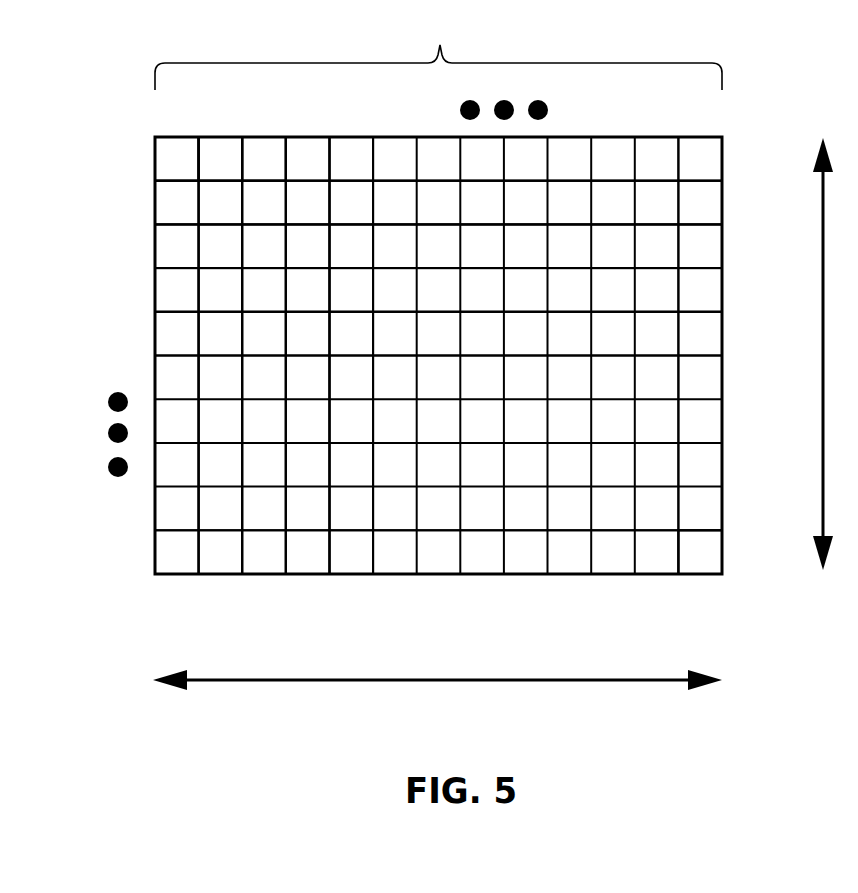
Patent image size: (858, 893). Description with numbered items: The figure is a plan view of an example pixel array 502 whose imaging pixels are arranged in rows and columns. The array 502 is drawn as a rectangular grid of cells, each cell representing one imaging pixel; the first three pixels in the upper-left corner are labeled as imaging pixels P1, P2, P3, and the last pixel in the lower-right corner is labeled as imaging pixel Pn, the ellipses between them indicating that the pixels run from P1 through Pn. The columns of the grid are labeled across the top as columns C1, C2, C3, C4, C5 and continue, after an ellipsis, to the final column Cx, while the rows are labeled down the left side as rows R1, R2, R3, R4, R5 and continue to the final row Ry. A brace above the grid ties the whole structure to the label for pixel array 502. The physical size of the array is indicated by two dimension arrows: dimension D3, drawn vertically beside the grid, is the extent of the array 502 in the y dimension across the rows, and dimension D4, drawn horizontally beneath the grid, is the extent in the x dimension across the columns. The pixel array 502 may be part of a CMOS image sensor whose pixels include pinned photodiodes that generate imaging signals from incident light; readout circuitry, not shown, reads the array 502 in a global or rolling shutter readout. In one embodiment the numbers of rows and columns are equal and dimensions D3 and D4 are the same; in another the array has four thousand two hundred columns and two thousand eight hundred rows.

The pixel array 502 is at (415, 293).
The dimension D3 is at (802, 354).
The dimension D4 is at (437, 664).
The column C1 is at (177, 336).
The column C2 is at (221, 336).
The column C3 is at (264, 336).
The column C4 is at (308, 336).
The column C5 is at (352, 336).
The column Cx is at (700, 336).
The row R1 is at (415, 159).
The row R2 is at (415, 203).
The row R3 is at (415, 246).
The row R4 is at (415, 290).
The row R5 is at (415, 334).
The row Ry is at (416, 552).
The imaging pixel P1 is at (177, 159).
The imaging pixel P2 is at (221, 159).
The imaging pixel P3 is at (264, 159).
The imaging pixel Pn is at (700, 552).